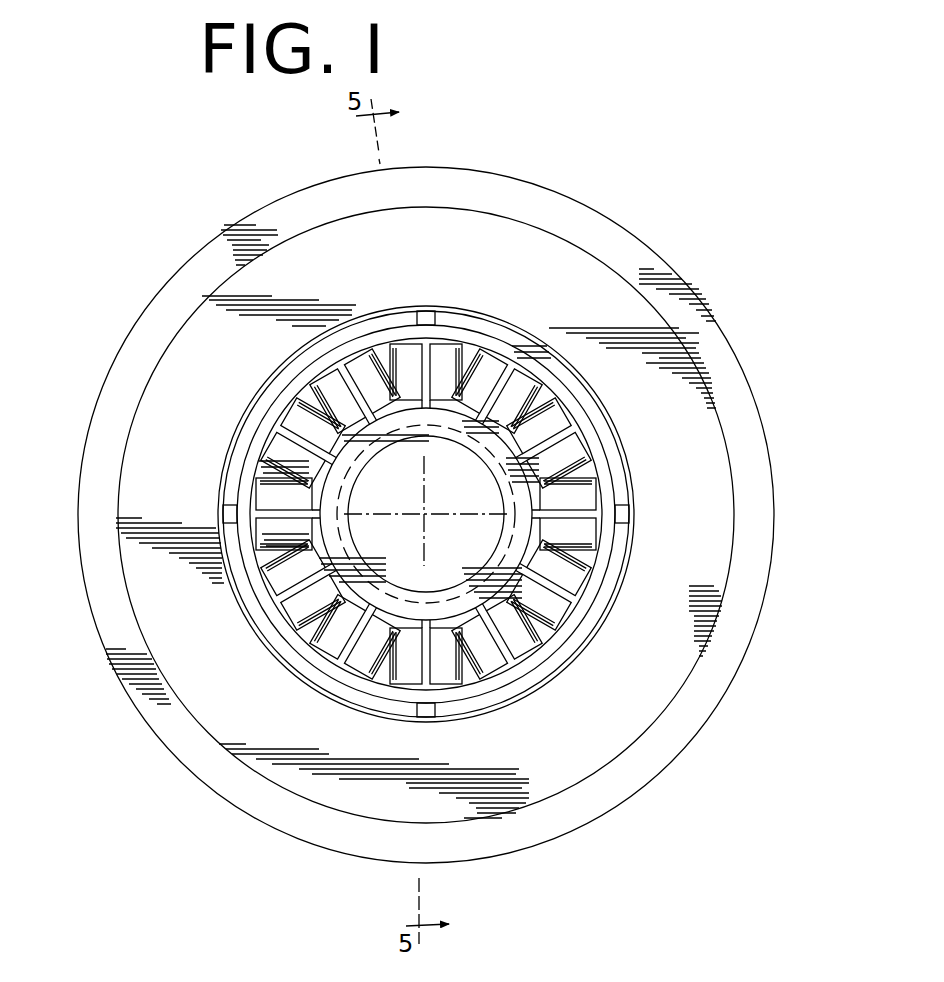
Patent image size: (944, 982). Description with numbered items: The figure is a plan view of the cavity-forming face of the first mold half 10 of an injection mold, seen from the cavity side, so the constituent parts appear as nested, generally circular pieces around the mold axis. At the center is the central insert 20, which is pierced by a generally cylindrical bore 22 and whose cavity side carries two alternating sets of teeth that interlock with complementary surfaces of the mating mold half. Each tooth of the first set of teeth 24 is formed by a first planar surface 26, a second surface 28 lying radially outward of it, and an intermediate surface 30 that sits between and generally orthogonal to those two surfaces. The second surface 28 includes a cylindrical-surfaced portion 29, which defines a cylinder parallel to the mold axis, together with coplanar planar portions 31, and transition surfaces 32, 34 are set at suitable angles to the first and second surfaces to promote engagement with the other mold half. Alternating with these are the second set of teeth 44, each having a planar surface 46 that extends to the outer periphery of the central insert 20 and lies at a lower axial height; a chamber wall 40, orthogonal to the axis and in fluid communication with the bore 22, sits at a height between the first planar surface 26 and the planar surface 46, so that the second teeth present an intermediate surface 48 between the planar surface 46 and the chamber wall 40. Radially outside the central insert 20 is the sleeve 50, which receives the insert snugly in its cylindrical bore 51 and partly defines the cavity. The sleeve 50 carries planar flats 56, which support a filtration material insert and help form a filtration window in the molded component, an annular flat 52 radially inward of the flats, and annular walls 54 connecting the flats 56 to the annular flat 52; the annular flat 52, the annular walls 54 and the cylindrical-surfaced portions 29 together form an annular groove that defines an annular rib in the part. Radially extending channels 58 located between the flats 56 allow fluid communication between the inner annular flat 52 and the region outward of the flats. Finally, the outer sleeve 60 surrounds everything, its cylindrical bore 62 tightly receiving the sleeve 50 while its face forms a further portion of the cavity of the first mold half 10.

The first mold half 10 is at (692, 238).
The central insert 20 is at (331, 513).
The cylindrical bore 22 is at (483, 555).
The first set of teeth 24 is at (545, 457).
The first planar surface 26 is at (560, 482).
The second surface 28 is at (580, 438).
The cylindrical-surfaced portion 29 is at (570, 480).
The intermediate surface 30 is at (535, 447).
The planar portions 31 is at (288, 648).
The transition surface 32 is at (545, 425).
The transition surface 34 is at (577, 508).
The chamber wall 40 is at (447, 403).
The second set of teeth 44 is at (551, 410).
The planar surface 46 is at (600, 533).
The intermediate surface 48 is at (516, 497).
The sleeve 50 is at (624, 557).
The cylindrical bore 51 is at (606, 554).
The annular flat 52 is at (585, 610).
The annular walls 54 is at (566, 640).
The planar flats 56 is at (596, 590).
The radially extending channels 58 is at (284, 366).
The outer sleeve 60 is at (164, 448).
The cylindrical bore 62 is at (246, 452).